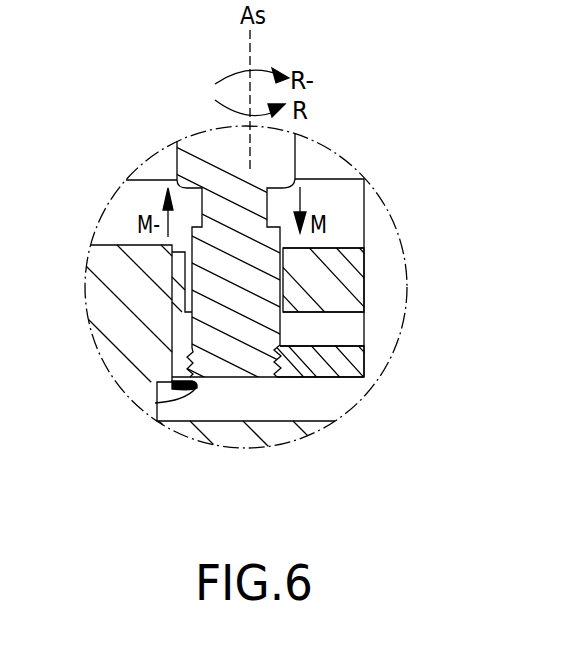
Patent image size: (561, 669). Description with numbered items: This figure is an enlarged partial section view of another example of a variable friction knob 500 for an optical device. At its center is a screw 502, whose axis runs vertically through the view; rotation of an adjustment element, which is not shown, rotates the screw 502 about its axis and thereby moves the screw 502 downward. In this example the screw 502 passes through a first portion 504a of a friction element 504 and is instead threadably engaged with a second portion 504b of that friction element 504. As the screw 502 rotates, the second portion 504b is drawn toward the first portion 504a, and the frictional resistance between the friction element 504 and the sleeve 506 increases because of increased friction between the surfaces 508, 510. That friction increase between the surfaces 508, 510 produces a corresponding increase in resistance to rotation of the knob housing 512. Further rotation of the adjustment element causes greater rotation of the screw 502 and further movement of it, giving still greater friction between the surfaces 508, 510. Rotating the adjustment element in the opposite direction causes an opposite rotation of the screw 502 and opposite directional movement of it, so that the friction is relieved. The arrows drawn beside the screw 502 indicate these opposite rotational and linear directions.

The variable friction knob 500 is at (394, 122).
The screw 502 is at (206, 151).
The friction element 504 is at (340, 302).
The first portion 504a is at (347, 278).
The second portion 504b is at (355, 369).
The sleeve 506 is at (98, 321).
The surface 508 is at (148, 268).
The surface 510 is at (157, 403).
The knob housing 512 is at (375, 223).